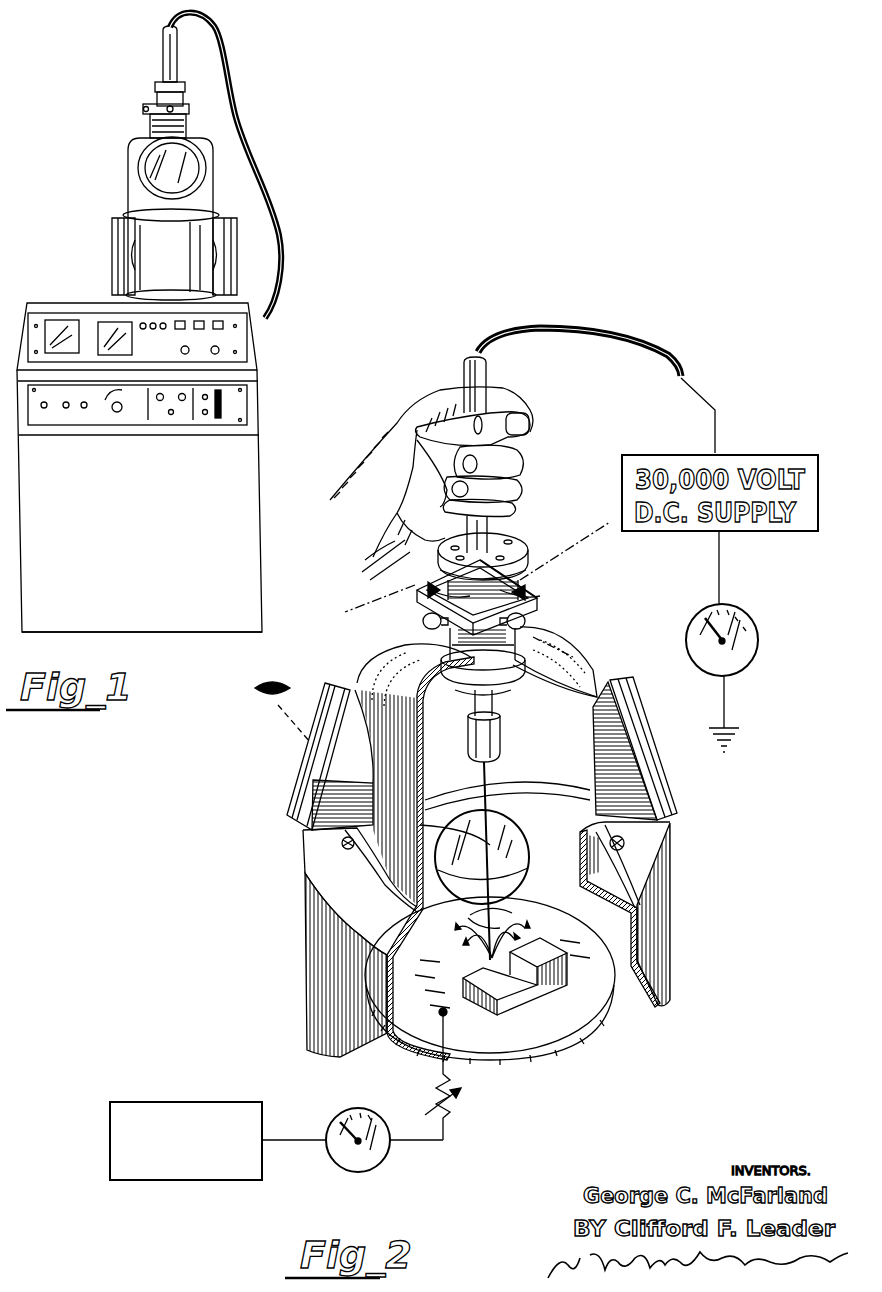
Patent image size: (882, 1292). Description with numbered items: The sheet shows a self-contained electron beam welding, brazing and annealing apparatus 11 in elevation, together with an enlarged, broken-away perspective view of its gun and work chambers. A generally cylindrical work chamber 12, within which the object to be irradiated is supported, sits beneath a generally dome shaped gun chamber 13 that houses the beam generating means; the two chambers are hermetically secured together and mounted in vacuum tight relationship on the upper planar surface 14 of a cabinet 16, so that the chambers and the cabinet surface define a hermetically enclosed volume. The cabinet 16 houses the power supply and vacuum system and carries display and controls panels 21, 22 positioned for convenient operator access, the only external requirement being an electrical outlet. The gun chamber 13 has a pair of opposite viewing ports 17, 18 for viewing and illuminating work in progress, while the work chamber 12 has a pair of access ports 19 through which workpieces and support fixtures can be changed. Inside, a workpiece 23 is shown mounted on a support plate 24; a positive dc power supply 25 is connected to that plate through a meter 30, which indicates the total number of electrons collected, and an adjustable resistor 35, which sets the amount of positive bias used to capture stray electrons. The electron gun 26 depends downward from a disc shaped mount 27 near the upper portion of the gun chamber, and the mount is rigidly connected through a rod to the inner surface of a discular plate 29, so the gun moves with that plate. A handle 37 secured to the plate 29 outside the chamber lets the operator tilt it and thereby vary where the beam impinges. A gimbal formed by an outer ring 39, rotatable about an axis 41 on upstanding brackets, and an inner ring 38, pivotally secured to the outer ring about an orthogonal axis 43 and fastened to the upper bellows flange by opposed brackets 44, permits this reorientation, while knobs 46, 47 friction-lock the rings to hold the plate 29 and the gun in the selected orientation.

In FIG. 1, the apparatus 11 is at (288, 298).
In FIG. 1, the work chamber 12 is at (190, 240).
In FIG. 2, the work chamber 12 is at (320, 968).
In FIG. 1, the gun chamber 13 is at (128, 183).
In FIG. 2, the gun chamber 13 is at (590, 672).
In FIG. 1, the upper planar surface 14 is at (80, 298).
In FIG. 1, the cabinet 16 is at (258, 436).
In FIG. 1, the viewing port 17 is at (205, 148).
In FIG. 2, the viewing port 17 is at (325, 690).
In FIG. 2, the viewing port 18 is at (655, 735).
In FIG. 1, the access port 19 is at (112, 250).
In FIG. 2, the access port 19 is at (515, 835).
In FIG. 1, the display and controls panel 21 is at (240, 352).
In FIG. 1, the display and controls panel 22 is at (238, 419).
In FIG. 2, the workpiece 23 is at (570, 1000).
In FIG. 2, the support plate 24 is at (545, 1045).
In FIG. 2, the positive dc power supply 25 is at (205, 1180).
In FIG. 2, the gun 26 is at (498, 735).
In FIG. 2, the disc shaped mount 27 is at (504, 696).
In FIG. 2, the plate 29 is at (505, 535).
In FIG. 2, the meter 30 is at (378, 1165).
In FIG. 2, the adjustable resistor 35 is at (450, 1120).
In FIG. 2, the handle 37 is at (490, 372).
In FIG. 2, the inner ring 38 is at (520, 585).
In FIG. 2, the outer ring 39 is at (417, 598).
In FIG. 2, the axis 41 is at (414, 675).
In FIG. 2, the axis 43 is at (560, 652).
In FIG. 2, the brackets 44 is at (540, 600).
In FIG. 2, the knob 46 is at (423, 621).
In FIG. 2, the knob 47 is at (525, 620).